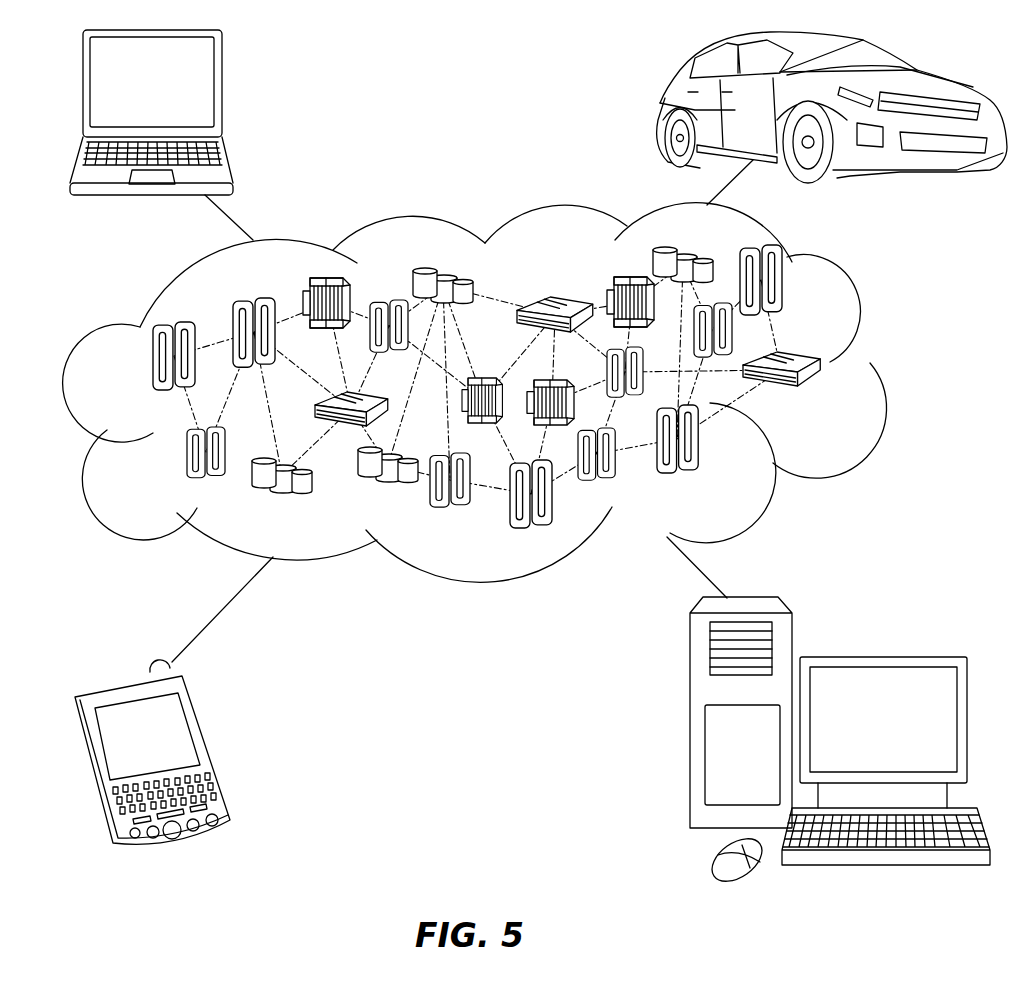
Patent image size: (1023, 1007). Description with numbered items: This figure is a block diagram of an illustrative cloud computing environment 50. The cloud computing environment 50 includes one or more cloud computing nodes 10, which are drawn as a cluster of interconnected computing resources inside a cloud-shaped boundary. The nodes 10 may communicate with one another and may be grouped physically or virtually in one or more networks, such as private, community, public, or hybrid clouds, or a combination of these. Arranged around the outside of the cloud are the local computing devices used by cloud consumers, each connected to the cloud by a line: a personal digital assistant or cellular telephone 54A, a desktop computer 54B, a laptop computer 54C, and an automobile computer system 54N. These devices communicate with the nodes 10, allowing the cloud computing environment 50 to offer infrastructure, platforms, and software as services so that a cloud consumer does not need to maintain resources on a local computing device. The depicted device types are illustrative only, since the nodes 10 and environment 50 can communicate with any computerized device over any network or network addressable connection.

The cloud computing nodes 10 is at (822, 398).
The cloud computing environment 50 is at (882, 370).
The personal digital assistant (PDA) or cellular telephone 54A is at (212, 752).
The desktop computer 54B is at (880, 655).
The laptop computer 54C is at (222, 92).
The automobile computer system 54N is at (658, 108).